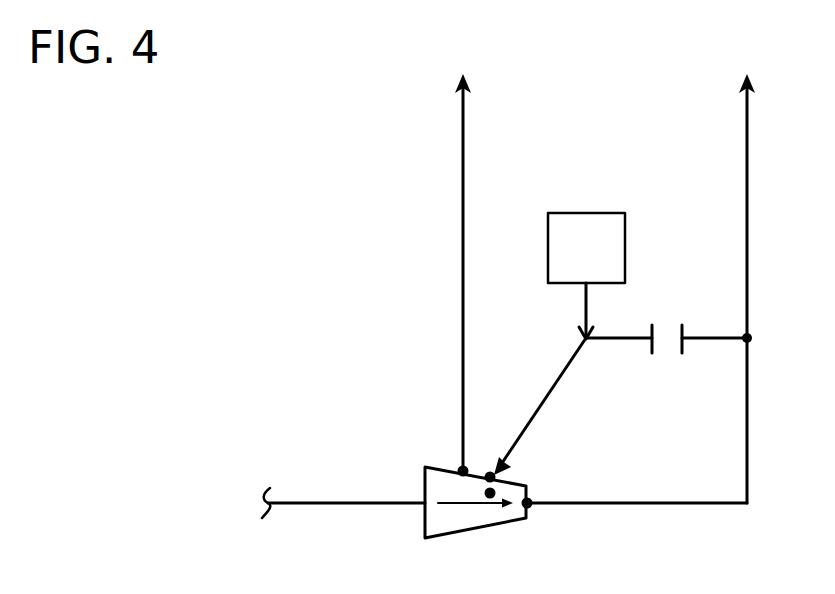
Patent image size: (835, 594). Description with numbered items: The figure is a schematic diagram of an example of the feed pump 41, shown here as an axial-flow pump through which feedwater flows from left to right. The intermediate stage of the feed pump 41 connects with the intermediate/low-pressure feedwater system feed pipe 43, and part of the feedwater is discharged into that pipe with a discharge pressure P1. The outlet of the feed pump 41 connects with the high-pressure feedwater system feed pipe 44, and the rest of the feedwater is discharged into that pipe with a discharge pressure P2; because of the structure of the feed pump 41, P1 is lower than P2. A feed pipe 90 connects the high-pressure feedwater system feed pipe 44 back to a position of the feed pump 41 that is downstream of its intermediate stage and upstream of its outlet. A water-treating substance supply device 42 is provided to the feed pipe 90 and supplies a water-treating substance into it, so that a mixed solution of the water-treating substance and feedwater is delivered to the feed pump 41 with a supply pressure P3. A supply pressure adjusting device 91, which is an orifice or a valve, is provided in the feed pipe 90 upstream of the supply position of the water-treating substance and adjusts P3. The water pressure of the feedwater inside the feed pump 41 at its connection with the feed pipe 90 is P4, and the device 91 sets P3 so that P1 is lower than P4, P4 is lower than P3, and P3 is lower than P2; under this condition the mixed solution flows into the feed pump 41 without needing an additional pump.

The feed pump 41 is at (510, 526).
The water-treating substance supply device 42 is at (590, 213).
The intermediate/low-pressure feedwater system feed pipe 43 is at (463, 180).
The high-pressure feedwater system feed pipe 44 is at (747, 178).
The feed pipe 90 is at (563, 377).
The supply pressure adjusting device 91 is at (667, 320).
The discharge pressure P1 is at (460, 468).
The discharge pressure P2 is at (532, 506).
The supply pressure P3 is at (497, 478).
The water pressure P4 is at (484, 492).